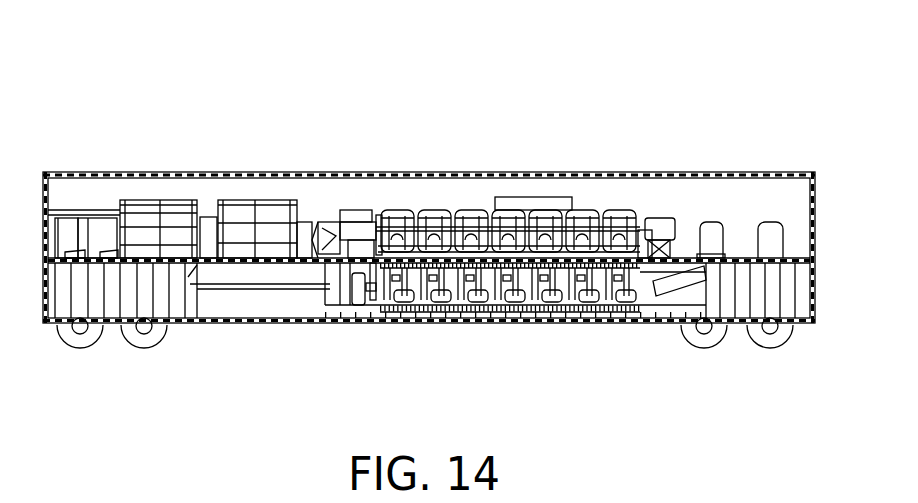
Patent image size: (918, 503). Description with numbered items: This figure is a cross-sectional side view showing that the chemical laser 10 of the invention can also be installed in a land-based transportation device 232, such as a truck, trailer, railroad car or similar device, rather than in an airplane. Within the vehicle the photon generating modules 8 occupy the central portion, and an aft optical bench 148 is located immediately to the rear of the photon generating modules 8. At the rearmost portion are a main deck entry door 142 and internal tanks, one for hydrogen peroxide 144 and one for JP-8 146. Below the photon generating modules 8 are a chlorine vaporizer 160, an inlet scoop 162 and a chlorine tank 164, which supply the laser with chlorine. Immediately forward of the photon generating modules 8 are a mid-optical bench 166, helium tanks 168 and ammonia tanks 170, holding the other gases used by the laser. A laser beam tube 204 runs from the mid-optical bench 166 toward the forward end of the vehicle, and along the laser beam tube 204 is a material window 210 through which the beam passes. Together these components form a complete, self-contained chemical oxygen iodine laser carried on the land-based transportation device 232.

The land-based transportation device 232 is at (463, 166).
The chemical laser 10 is at (537, 210).
The photon generating modules 8 is at (404, 210).
The mid-optical bench 166 is at (345, 210).
The helium tanks 168 is at (270, 200).
The laser beam tube 204 is at (102, 212).
The ammonia tanks 170 is at (95, 222).
The material window 210 is at (50, 205).
The aft optical bench 148 is at (657, 223).
The hydrogen peroxide tank 144 is at (707, 223).
The main deck entry door 142 is at (785, 238).
The chlorine tank 164 is at (358, 288).
The inlet scoop 162 is at (383, 318).
The chlorine vaporizer 160 is at (393, 306).
The JP-8 tank 146 is at (672, 285).